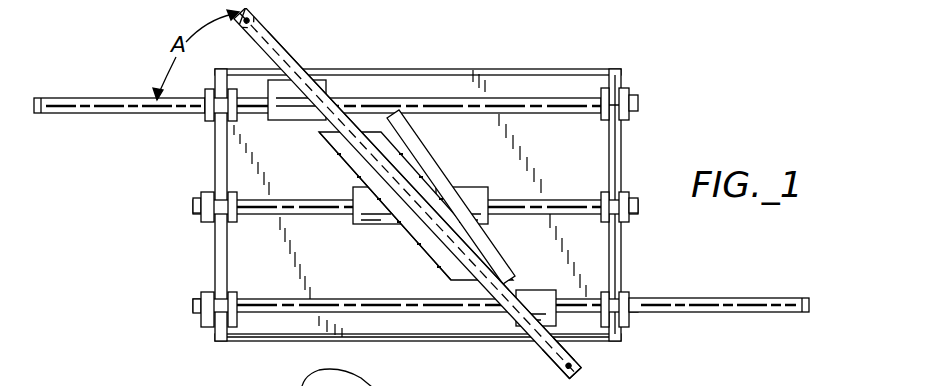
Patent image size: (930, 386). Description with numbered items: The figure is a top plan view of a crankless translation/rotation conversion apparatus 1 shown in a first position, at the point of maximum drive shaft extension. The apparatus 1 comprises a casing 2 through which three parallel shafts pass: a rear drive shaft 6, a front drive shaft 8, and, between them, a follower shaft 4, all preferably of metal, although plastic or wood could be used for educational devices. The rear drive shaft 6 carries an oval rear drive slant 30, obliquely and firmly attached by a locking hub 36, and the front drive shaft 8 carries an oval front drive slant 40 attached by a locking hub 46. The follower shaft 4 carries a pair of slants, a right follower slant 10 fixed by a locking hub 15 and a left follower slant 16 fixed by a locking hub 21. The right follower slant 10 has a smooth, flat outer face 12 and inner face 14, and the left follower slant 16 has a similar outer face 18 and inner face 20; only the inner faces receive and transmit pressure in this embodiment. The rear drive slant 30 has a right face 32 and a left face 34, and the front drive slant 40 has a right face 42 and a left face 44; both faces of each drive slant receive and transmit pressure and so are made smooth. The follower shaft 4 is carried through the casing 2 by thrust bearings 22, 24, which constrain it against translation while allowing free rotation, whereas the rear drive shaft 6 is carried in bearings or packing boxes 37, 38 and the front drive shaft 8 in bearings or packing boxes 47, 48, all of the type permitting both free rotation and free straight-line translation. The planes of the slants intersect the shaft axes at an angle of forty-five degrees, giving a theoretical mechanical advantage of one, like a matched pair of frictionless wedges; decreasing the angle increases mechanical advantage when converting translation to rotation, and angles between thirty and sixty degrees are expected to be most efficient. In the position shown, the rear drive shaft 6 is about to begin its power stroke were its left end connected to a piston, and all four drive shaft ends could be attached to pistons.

The crankless translation/rotation conversion apparatus 1 is at (587, 55).
The casing 2 is at (618, 150).
The follower shaft 4 is at (595, 192).
The rear drive shaft 6 is at (540, 97).
The front drive shaft 8 is at (746, 296).
The right follower slant 10 is at (385, 138).
The outer face of right follower slant 12 is at (410, 176).
The inner face of right follower slant 14 is at (475, 252).
The locking hub 15 is at (458, 185).
The left follower slant 16 is at (345, 152).
The outer face of left follower slant 18 is at (438, 260).
The inner face of left follower slant 20 is at (352, 190).
The locking hub 21 is at (365, 216).
The thrust bearing 22 is at (623, 216).
The thrust bearing 24 is at (207, 222).
The rear drive slant 30 is at (312, 45).
The right face of rear drive slant 32 is at (340, 85).
The left face of rear drive slant 34 is at (272, 44).
The locking hub 36 is at (275, 120).
The bearing or packing box 37 is at (623, 73).
The bearing or packing box 38 is at (207, 122).
The front drive slant 40 is at (560, 362).
The right face of front drive slant 42 is at (565, 356).
The left face of front drive slant 44 is at (545, 355).
The locking hub 46 is at (522, 290).
The bearing or packing box 47 is at (625, 298).
The bearing or packing box 48 is at (205, 298).